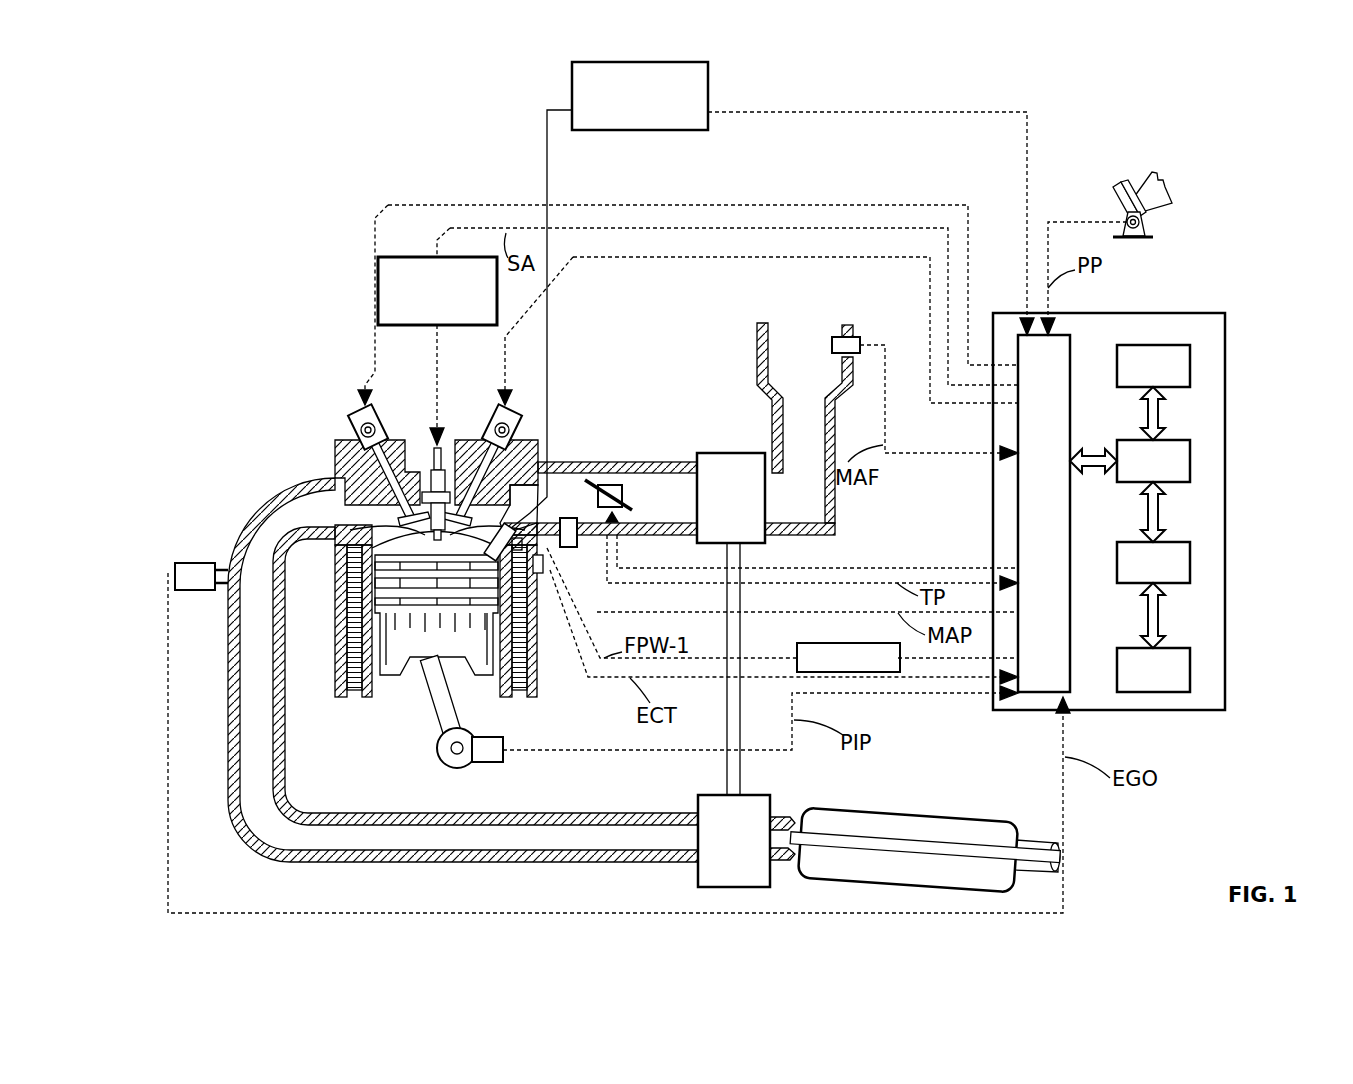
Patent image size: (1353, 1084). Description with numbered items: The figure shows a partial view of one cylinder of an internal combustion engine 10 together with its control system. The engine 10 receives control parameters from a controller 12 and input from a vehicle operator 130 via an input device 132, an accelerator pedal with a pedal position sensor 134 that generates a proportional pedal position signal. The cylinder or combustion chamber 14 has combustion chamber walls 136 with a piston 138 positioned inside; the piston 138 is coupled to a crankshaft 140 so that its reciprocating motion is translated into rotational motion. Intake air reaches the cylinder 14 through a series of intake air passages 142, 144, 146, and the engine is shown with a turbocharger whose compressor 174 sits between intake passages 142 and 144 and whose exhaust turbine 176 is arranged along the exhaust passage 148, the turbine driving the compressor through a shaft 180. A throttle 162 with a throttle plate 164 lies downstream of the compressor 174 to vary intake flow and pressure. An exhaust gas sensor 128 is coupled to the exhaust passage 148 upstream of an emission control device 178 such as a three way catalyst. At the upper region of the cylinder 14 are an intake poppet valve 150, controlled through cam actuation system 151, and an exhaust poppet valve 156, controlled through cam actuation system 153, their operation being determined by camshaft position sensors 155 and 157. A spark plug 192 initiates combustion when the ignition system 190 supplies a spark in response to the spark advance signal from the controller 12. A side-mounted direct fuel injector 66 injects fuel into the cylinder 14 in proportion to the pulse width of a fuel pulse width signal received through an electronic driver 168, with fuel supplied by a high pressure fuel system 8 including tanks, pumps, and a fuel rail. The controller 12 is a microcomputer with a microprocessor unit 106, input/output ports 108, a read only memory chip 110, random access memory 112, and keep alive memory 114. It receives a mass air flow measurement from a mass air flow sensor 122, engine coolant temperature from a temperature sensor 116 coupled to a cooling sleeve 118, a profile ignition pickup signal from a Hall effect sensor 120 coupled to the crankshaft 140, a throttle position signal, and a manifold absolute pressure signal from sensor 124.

The high pressure fuel system 8 is at (708, 73).
The internal combustion engine 10 is at (155, 135).
The controller 12 is at (1222, 313).
The cylinder 14 is at (338, 570).
The fuel injector 66 is at (503, 530).
The microprocessor unit 106 is at (1192, 457).
The input/output ports 108 is at (1072, 342).
The read only memory chip 110 is at (1192, 362).
The random access memory 112 is at (1192, 560).
The keep alive memory 114 is at (1192, 665).
The temperature sensor 116 is at (545, 570).
The cooling sleeve 118 is at (535, 555).
The Hall effect sensor 120 is at (493, 763).
The mass air flow sensor 122 is at (850, 338).
The manifold pressure sensor 124 is at (570, 548).
The exhaust gas sensor 128 is at (174, 566).
The vehicle operator 130 is at (1168, 186).
The input device 132 is at (1113, 200).
The pedal position sensor 134 is at (1148, 222).
The combustion chamber walls 136 is at (372, 703).
The piston 138 is at (420, 647).
The crankshaft 140 is at (445, 766).
The intake air passage 142 is at (821, 372).
The intake air passage 144 is at (685, 509).
The intake air passage 146 is at (585, 509).
The exhaust passage 148 is at (318, 517).
The intake poppet valve 150 is at (434, 480).
The cam actuation system 151 is at (492, 412).
The cam actuation system 153 is at (370, 392).
The camshaft position sensor 155 is at (520, 432).
The exhaust poppet valve 156 is at (390, 510).
The camshaft position sensor 157 is at (355, 420).
The throttle 162 is at (614, 484).
The throttle plate 164 is at (586, 486).
The electronic driver 168 is at (800, 642).
The compressor 174 is at (718, 452).
The exhaust turbine 176 is at (698, 870).
The emission control device 178 is at (975, 815).
The shaft 180 is at (733, 757).
The ignition system 190 is at (396, 257).
The spark plug 192 is at (432, 468).